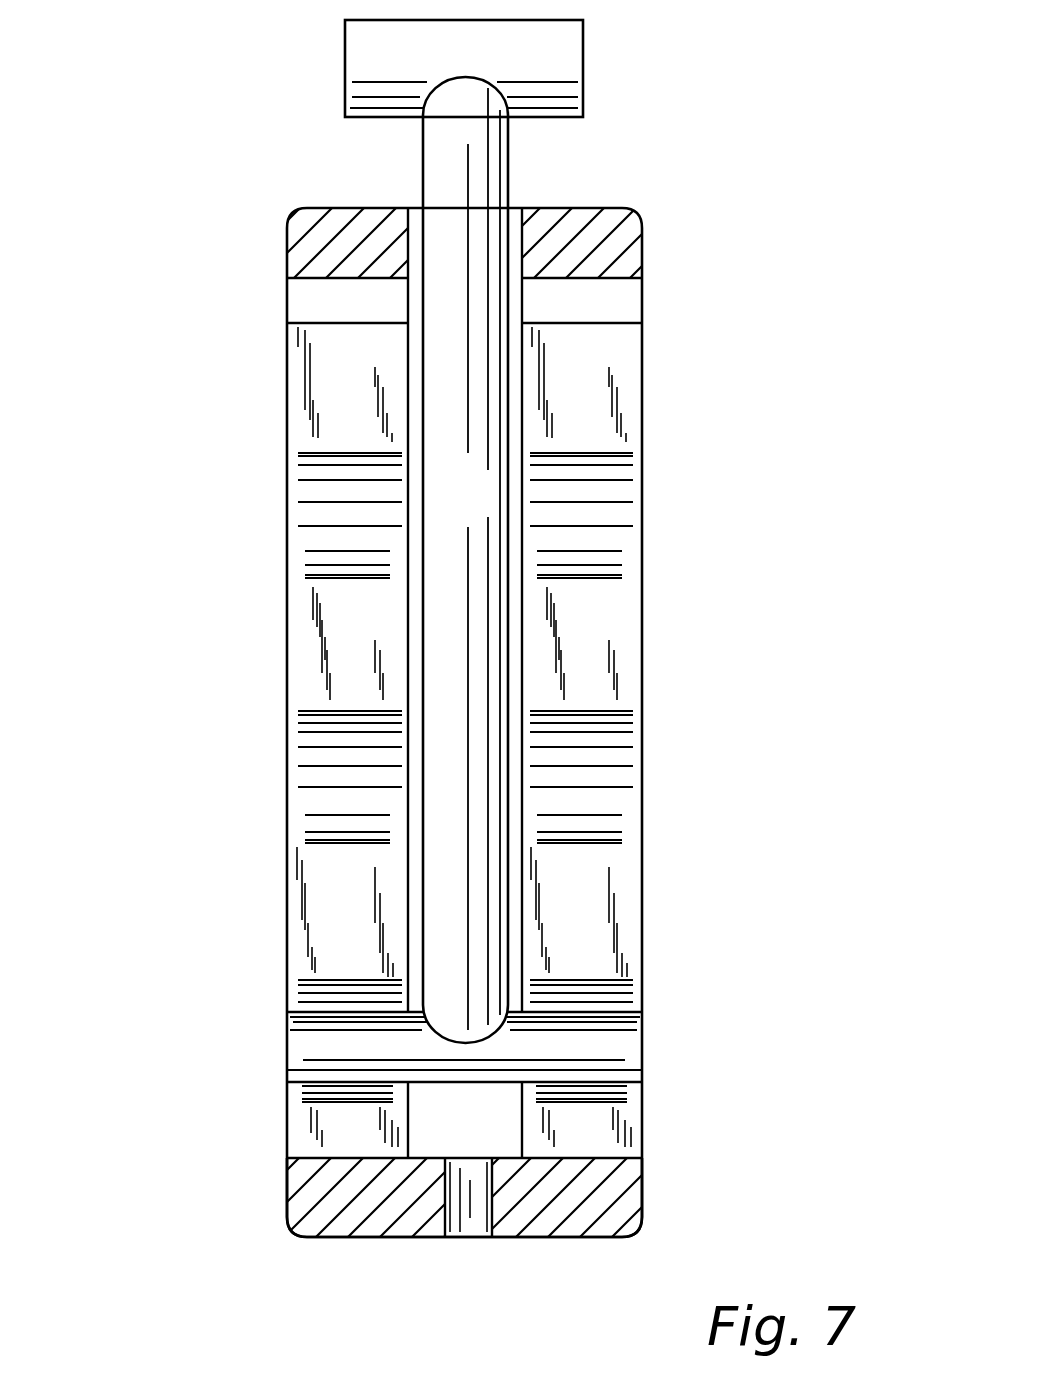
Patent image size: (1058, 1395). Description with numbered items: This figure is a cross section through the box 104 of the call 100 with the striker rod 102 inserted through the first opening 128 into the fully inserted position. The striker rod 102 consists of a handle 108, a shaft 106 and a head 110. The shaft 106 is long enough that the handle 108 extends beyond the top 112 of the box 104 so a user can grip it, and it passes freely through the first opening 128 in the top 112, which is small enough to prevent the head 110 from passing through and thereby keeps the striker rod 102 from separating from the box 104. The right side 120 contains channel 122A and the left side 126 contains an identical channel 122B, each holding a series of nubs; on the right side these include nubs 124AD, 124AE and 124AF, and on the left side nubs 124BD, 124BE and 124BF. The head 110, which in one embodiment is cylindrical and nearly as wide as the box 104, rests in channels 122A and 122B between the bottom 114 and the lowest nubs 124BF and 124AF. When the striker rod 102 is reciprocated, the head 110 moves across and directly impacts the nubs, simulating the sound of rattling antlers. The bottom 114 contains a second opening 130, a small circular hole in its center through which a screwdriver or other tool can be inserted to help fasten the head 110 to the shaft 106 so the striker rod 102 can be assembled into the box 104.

The call 100 is at (248, 242).
The striker rod 102 is at (519, 526).
The box 104 is at (612, 240).
The shaft 106 is at (489, 506).
The handle 108 is at (400, 64).
The head 110 is at (381, 1061).
The top 112 is at (357, 203).
The bottom 114 is at (554, 1239).
The right side 120 is at (646, 1202).
The channel 122A is at (592, 352).
The channel 122B is at (345, 430).
The nub 124AD is at (590, 451).
The nub 124AE is at (624, 730).
The nub 124AF is at (602, 976).
The nub 124BD is at (360, 550).
The nub 124BE is at (341, 736).
The nub 124BF is at (320, 990).
The left side 126 is at (287, 1196).
The first opening 128 is at (516, 188).
The second opening 130 is at (463, 1249).